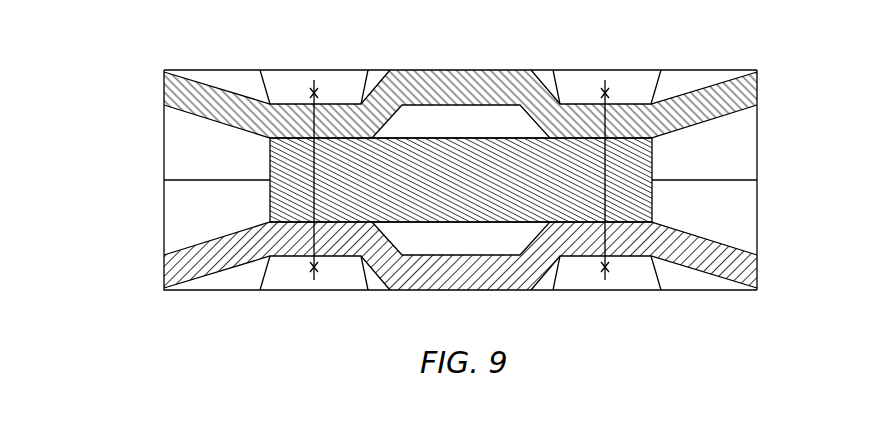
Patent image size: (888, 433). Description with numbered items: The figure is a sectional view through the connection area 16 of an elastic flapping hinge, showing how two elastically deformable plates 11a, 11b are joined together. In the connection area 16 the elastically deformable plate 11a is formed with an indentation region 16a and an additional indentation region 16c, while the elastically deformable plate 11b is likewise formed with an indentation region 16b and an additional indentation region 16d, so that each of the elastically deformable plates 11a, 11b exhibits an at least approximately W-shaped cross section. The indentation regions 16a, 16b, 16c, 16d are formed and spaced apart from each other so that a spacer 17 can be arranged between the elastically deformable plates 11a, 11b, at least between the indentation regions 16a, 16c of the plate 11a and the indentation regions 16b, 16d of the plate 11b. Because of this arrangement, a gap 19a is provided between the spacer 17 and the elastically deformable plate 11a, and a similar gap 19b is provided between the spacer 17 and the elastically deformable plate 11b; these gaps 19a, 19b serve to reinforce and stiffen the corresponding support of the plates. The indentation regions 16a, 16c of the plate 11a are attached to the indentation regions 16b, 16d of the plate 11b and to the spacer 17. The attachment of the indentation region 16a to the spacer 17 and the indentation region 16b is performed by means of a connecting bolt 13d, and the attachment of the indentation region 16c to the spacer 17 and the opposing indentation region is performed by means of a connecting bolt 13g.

The connection area 16 is at (226, 57).
The indentation region 16a is at (196, 118).
The indentation region 16b is at (194, 238).
The additional indentation region 16c is at (723, 118).
The additional indentation region 16d is at (723, 242).
The spacer 17 is at (270, 158).
The elastically deformable plate 11a is at (761, 89).
The elastically deformable plate 11b is at (761, 271).
The gap 19a is at (460, 118).
The gap 19b is at (470, 243).
The connecting bolt 13d is at (313, 259).
The connecting bolt 13g is at (607, 261).